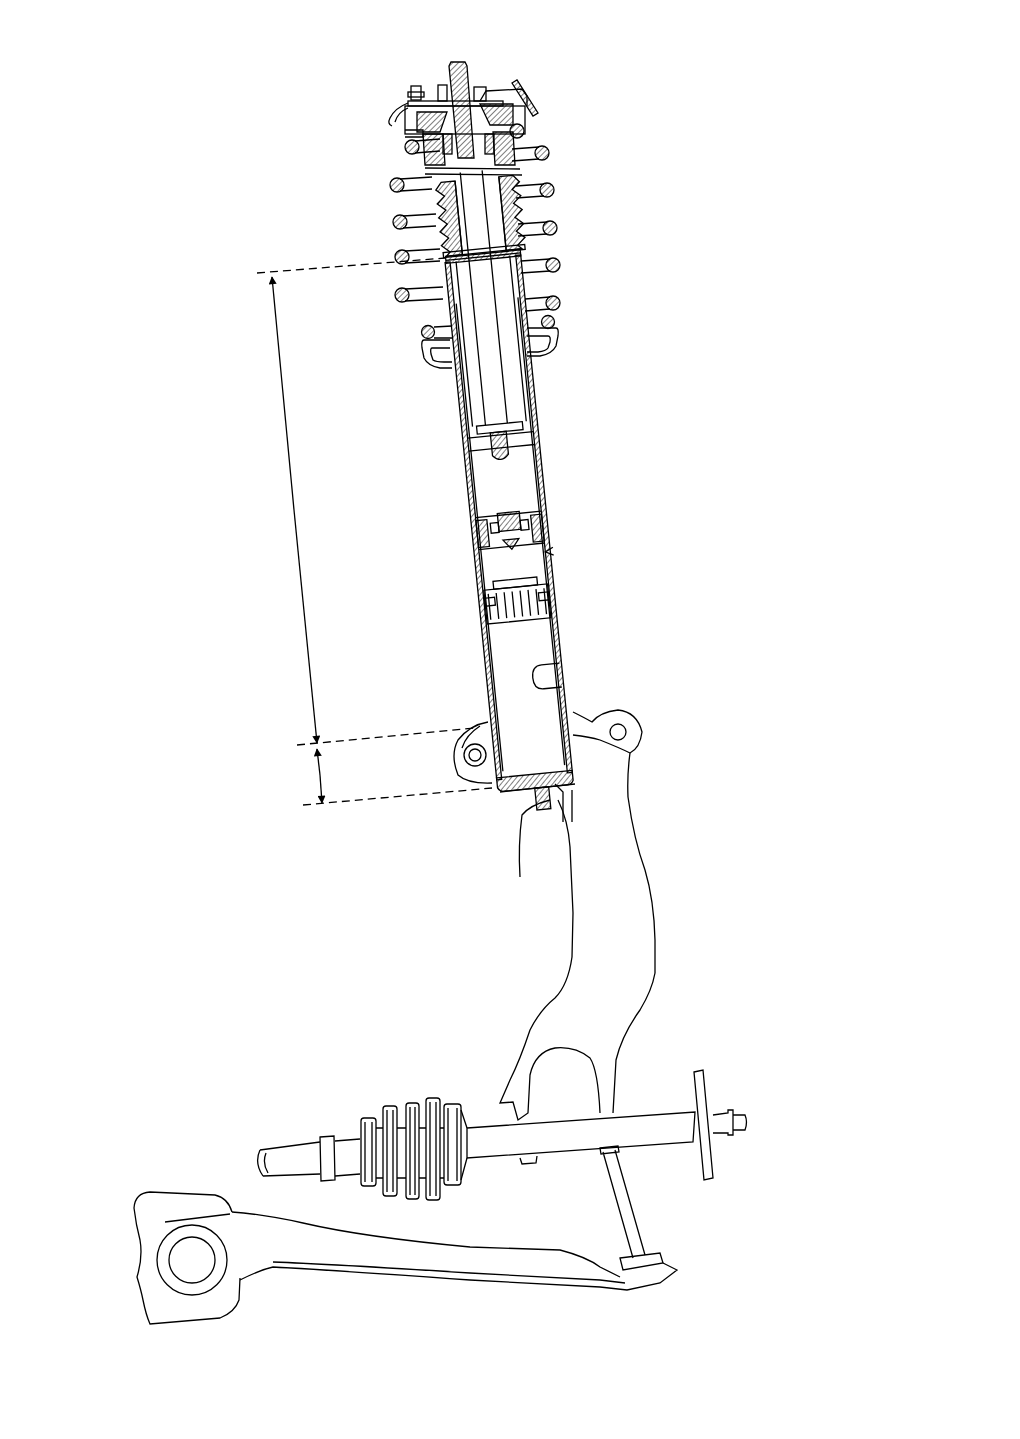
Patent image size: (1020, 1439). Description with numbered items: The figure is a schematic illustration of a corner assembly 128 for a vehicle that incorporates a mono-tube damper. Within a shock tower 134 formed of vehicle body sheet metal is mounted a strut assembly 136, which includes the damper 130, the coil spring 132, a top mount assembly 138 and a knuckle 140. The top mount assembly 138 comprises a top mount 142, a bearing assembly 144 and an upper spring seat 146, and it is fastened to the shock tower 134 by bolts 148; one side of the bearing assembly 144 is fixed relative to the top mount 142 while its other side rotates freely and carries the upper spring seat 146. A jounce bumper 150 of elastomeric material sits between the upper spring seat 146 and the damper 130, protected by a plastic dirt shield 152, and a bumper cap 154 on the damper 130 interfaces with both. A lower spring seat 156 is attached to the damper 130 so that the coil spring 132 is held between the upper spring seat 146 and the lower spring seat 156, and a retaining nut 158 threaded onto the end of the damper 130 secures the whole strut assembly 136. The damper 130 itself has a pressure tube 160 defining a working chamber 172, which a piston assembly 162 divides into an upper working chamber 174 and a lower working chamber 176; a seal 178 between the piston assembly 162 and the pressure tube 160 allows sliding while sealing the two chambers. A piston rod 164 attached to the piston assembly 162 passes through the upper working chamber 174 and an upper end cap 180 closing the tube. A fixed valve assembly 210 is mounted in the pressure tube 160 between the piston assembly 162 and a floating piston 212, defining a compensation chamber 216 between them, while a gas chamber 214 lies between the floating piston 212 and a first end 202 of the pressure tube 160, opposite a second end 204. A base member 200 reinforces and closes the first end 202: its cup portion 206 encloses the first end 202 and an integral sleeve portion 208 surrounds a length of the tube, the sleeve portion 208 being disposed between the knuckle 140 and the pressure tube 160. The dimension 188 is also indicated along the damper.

The corner assembly 128 is at (714, 115).
The damper 130 is at (445, 416).
The coil spring 132 is at (552, 150).
The shock tower 134 is at (545, 103).
The strut assembly 136 is at (420, 360).
The top mount assembly 138 is at (514, 70).
The knuckle 140 is at (607, 1090).
The top mount 142 is at (392, 114).
The bearing assembly 144 is at (518, 92).
The upper spring seat 146 is at (422, 160).
The bolts 148 is at (410, 90).
The jounce bumper 150 is at (512, 176).
The plastic dirt shield 152 is at (545, 205).
The bumper cap 154 is at (532, 250).
The lower spring seat 156 is at (562, 330).
The retaining nut 158 is at (480, 86).
The pressure tube 160 is at (528, 385).
The piston assembly 162 is at (524, 430).
The piston rod 164 is at (492, 385).
The working chamber 172 is at (482, 503).
The upper working chamber 174 is at (530, 412).
The lower working chamber 176 is at (530, 480).
The seal 178 is at (468, 449).
The upper end cap 180 is at (442, 261).
The strut length 188 is at (369, 531).
The base member 200 is at (486, 739).
The first end 202 is at (490, 803).
The second end 204 is at (423, 241).
The cup portion 206 is at (525, 847).
The sleeve portion 208 is at (628, 750).
The fixed valve assembly 210 is at (546, 525).
The floating piston 212 is at (554, 595).
The gas chamber 214 is at (560, 692).
The compensation chamber 216 is at (548, 556).